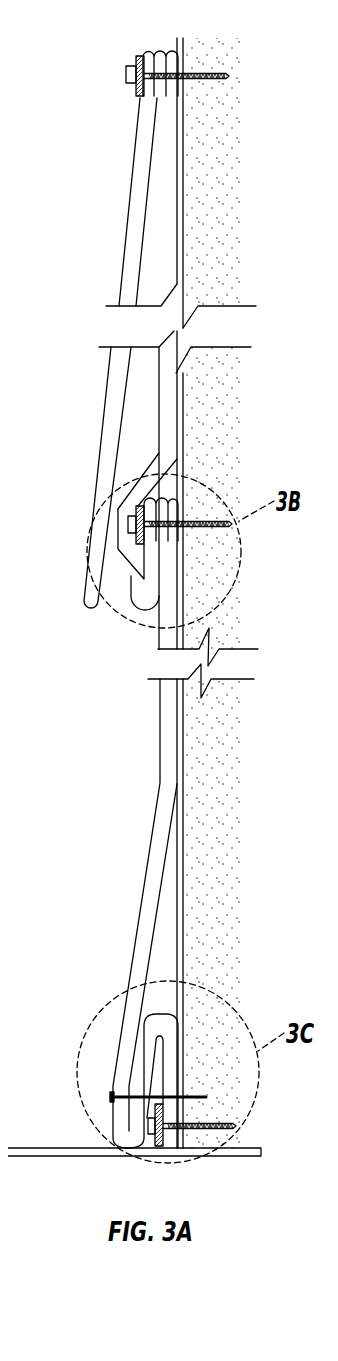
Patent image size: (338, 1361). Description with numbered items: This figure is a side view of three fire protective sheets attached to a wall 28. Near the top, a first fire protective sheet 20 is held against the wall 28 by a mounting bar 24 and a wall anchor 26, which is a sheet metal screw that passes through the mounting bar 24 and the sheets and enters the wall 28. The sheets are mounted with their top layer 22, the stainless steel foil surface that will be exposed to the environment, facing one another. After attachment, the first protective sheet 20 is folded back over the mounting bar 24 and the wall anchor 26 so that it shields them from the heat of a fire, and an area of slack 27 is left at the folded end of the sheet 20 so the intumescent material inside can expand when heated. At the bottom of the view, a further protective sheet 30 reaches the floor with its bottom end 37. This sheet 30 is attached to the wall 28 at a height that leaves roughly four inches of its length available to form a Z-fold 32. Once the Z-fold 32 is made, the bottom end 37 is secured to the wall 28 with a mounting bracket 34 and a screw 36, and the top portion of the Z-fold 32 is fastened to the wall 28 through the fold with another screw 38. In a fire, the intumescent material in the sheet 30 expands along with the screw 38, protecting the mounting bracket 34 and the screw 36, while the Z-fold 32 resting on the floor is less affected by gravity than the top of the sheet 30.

The first fire protective sheet 20 is at (167, 412).
The top layer 22 is at (136, 285).
The mounting bar 24 is at (138, 57).
The wall anchor 26 is at (132, 72).
The area of slack 27 is at (135, 553).
The wall 28 is at (222, 438).
The protective sheet 30 is at (142, 890).
The Z-fold 32 is at (135, 1060).
The mounting bracket 34 is at (155, 1145).
The screw 36 is at (137, 1145).
The bottom end 37 is at (170, 1145).
The screw 38 is at (110, 1123).